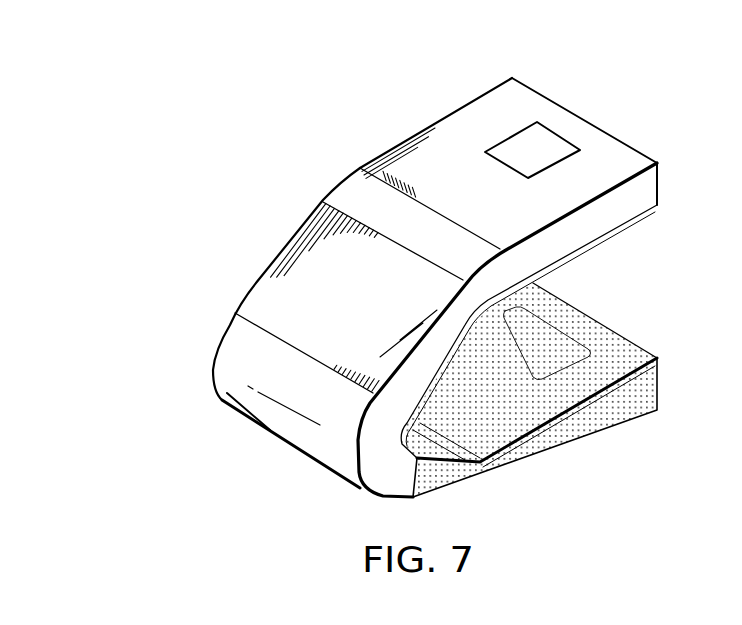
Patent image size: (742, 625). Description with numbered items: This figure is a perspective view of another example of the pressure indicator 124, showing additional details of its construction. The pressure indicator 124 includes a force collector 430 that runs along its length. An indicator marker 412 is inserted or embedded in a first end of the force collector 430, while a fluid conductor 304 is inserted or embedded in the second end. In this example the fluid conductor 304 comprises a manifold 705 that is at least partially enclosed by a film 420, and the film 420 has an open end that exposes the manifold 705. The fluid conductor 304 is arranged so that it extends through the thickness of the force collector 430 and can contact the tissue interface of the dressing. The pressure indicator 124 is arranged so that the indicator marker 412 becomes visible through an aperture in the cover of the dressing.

The pressure indicator 124 is at (431, 89).
The force collector 430 is at (283, 246).
The indicator marker 412 is at (549, 139).
The manifold 705 is at (552, 334).
The film 420 is at (633, 352).
The fluid conductor 304 is at (581, 452).